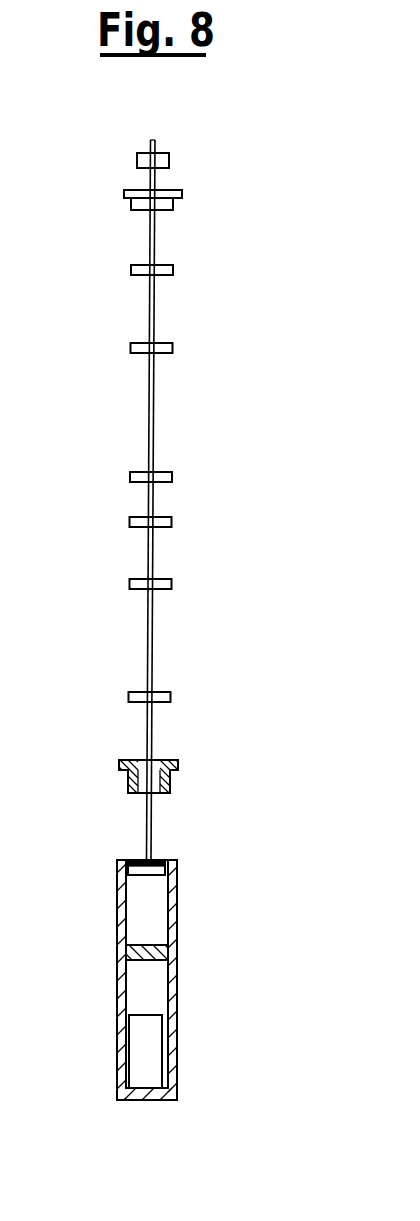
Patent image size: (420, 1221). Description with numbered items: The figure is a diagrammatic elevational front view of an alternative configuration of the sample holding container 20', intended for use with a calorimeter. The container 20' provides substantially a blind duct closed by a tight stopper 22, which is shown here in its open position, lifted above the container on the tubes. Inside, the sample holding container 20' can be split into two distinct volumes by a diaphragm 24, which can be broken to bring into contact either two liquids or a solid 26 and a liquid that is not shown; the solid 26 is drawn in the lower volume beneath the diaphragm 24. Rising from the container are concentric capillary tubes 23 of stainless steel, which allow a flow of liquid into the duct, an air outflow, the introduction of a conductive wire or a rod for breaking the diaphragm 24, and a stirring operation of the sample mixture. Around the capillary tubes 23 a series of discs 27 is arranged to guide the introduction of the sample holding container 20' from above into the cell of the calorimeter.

The sample holding container 20' is at (216, 980).
The tight stopper 22 is at (171, 779).
The concentric capillary tubes 23 is at (146, 627).
The diaphragm 24 is at (128, 948).
The solid 26 is at (133, 1043).
The discs 27 is at (165, 272).